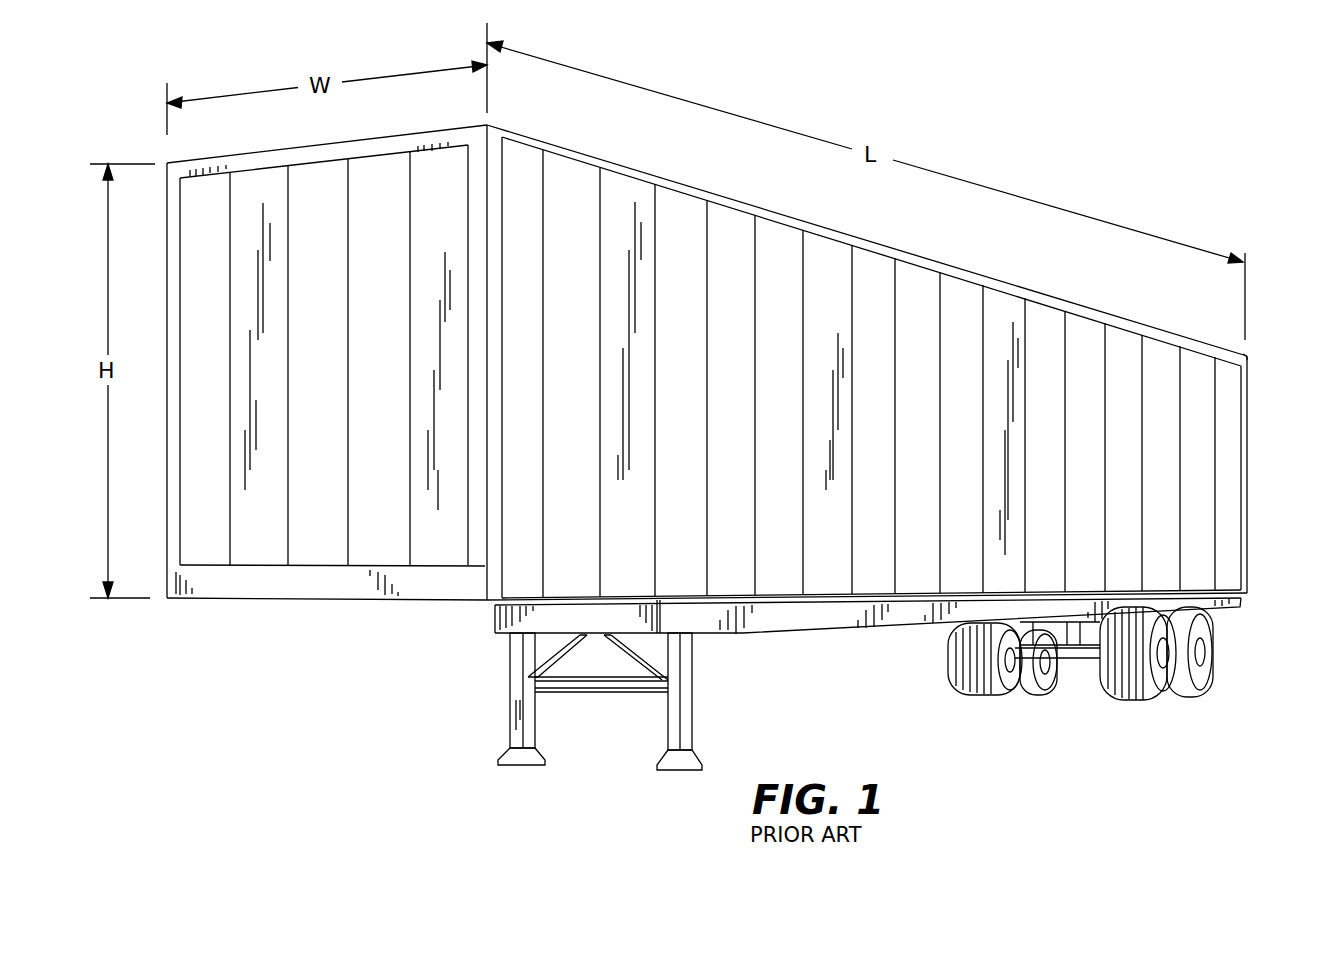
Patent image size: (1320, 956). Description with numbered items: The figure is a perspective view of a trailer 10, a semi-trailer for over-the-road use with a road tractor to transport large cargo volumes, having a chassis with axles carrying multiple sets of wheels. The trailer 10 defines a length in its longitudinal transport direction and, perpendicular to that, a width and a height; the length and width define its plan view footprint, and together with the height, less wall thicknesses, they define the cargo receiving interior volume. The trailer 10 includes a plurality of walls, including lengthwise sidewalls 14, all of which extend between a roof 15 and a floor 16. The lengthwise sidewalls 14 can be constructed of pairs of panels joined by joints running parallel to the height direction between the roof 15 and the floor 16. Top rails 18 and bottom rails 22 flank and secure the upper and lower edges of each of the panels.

The trailer 10 is at (753, 88).
The lengthwise sidewalls 14 is at (746, 421).
The roof 15 is at (777, 217).
The floor 16 is at (337, 600).
The top rails 18 is at (1246, 358).
The bottom rails 22 is at (827, 592).